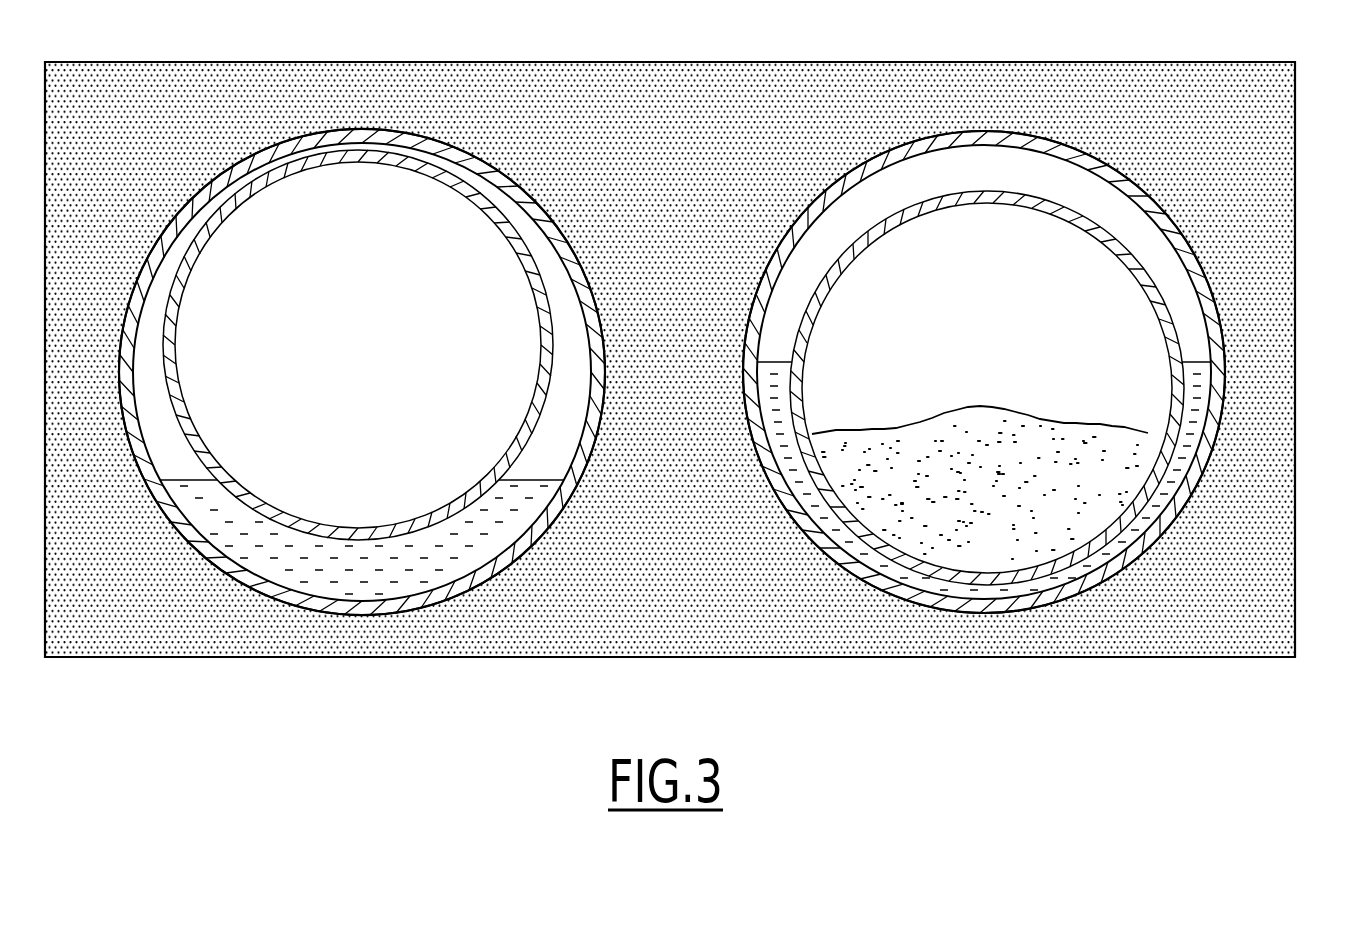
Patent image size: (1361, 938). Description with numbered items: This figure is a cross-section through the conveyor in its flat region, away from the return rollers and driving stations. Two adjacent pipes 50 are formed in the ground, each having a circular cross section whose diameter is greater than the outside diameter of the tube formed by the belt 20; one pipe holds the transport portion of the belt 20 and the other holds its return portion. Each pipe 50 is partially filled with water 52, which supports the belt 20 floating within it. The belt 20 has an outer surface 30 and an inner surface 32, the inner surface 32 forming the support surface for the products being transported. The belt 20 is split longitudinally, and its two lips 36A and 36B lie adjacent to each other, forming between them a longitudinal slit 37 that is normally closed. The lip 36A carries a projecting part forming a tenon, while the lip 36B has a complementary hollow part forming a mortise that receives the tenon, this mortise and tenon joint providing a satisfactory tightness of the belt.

The belt 20 is at (1162, 292).
The outer surface 30 is at (795, 516).
The inner surface 32 is at (855, 255).
The lip 36A is at (963, 190).
The lip 36B is at (1003, 197).
The longitudinal slit 37 is at (993, 185).
The pipe 50 is at (490, 165).
The water 52 is at (460, 550).